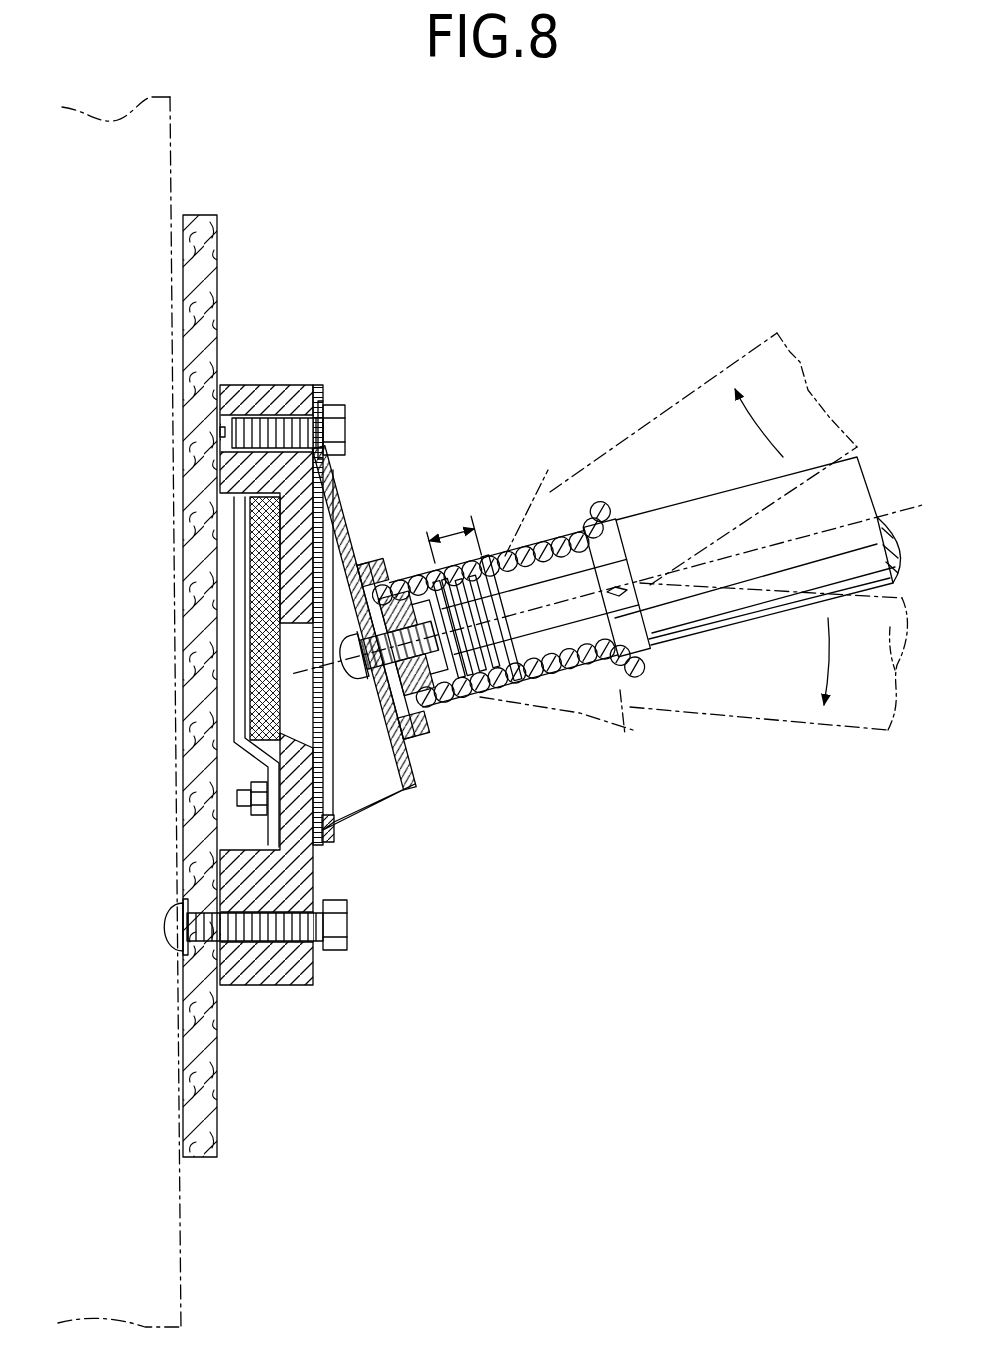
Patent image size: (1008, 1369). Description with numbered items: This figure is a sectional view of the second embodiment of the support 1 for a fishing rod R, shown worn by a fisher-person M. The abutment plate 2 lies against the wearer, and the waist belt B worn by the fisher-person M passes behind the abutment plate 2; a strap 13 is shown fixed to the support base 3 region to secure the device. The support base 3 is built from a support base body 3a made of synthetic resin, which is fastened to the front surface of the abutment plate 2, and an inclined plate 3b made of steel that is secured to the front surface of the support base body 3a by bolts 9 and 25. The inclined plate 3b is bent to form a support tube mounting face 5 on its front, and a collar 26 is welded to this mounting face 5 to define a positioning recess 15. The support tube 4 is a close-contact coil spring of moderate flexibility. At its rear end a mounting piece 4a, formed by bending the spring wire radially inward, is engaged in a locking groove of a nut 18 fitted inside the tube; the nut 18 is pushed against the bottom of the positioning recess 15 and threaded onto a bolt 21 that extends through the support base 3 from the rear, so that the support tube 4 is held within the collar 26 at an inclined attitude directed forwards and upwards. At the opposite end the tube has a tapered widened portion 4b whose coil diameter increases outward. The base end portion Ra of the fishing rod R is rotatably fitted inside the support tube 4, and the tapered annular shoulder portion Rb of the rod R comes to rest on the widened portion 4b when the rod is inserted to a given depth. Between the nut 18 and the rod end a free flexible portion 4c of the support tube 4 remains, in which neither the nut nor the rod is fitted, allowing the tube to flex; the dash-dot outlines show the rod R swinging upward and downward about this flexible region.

The fisher-person M is at (172, 147).
The abutment plate 2 is at (206, 251).
The support for the fishing rod 1 is at (507, 418).
The support base 3 is at (331, 265).
The support base body 3a is at (270, 394).
The inclined plate 3b is at (327, 402).
The bolt 25 is at (320, 461).
The bolt 9 is at (303, 930).
The strap 13 is at (236, 608).
The waist belt B is at (268, 682).
The support tube mounting face 5 is at (349, 547).
The bolt 21 is at (367, 664).
The positioning recess 15 is at (390, 607).
The collar 26 is at (412, 726).
The mounting piece 4a is at (428, 700).
The support tube 4 is at (525, 548).
The nut 18 is at (472, 695).
The free flexible portion 4c is at (453, 541).
The base end portion Ra is at (574, 568).
The tapered annular shoulder portion Rb is at (613, 557).
The widened portion 4b is at (638, 668).
The fishing rod R is at (837, 490).